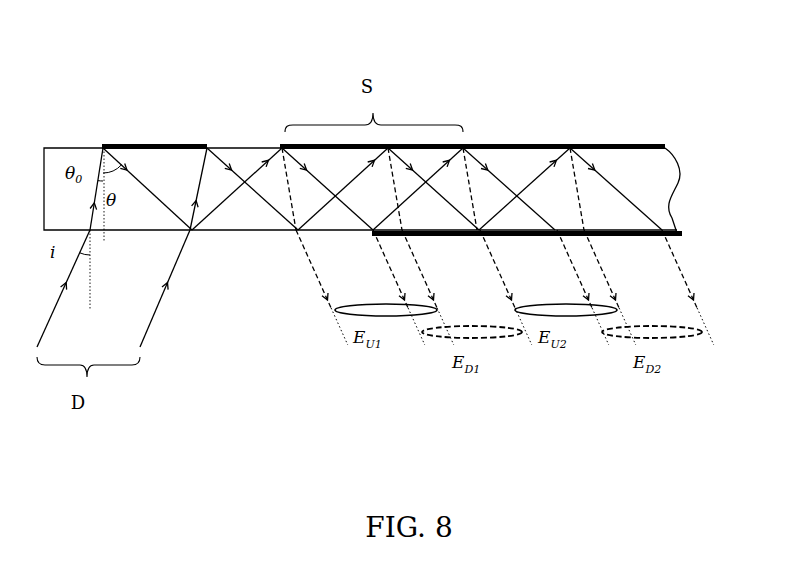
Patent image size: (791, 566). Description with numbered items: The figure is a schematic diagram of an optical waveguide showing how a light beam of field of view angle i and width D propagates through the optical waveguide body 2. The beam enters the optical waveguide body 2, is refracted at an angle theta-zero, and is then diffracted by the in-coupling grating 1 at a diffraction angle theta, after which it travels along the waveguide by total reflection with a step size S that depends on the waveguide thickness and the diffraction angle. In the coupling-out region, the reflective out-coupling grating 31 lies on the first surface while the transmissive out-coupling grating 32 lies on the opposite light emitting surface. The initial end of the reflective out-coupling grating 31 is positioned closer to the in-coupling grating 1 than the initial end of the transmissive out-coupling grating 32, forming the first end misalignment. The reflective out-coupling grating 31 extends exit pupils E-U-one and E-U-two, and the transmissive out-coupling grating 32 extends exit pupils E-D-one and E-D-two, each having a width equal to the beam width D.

The in-coupling grating 1 is at (143, 131).
The optical waveguide body 2 is at (698, 150).
The reflective out-coupling grating 31 is at (652, 131).
The transmissive out-coupling grating 32 is at (697, 242).